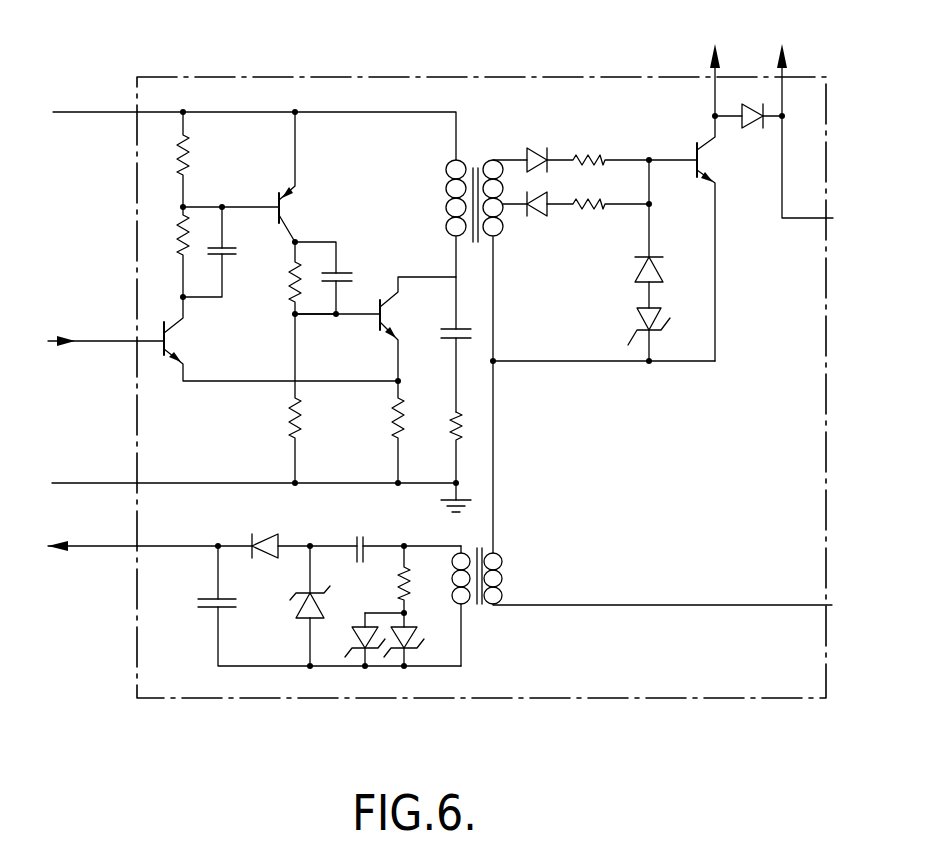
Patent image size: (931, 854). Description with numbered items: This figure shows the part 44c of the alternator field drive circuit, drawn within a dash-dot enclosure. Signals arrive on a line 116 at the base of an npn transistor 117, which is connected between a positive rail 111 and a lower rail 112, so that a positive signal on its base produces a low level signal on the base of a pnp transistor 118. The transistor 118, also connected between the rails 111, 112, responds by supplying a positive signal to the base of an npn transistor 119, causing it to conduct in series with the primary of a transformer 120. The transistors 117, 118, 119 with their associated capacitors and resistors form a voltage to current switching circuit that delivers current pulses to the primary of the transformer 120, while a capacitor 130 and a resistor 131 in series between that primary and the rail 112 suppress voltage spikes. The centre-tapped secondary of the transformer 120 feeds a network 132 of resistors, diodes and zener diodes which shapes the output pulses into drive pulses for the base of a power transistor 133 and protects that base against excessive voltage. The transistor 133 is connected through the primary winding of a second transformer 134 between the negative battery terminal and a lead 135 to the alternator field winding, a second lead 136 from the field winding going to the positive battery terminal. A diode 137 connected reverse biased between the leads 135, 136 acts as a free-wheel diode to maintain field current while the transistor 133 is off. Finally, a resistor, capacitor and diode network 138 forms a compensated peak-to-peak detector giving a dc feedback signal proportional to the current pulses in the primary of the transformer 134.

The part of circuit 44c is at (200, 662).
The rail 111 is at (243, 112).
The rail 112 is at (205, 484).
The line 116 is at (90, 340).
The npn transistor 117 is at (172, 341).
The pnp transistor 118 is at (292, 196).
The npn transistor 119 is at (378, 325).
The transformer 120 is at (481, 146).
The capacitor 130 is at (447, 343).
The resistor 131 is at (447, 427).
The network 132 is at (603, 379).
The power transistor 133 is at (695, 148).
The transformer 134 is at (516, 557).
The lead 135 is at (713, 95).
The second lead 136 is at (785, 95).
The diode 137 is at (752, 102).
The resistor, capacitor and diode network 138 is at (334, 688).